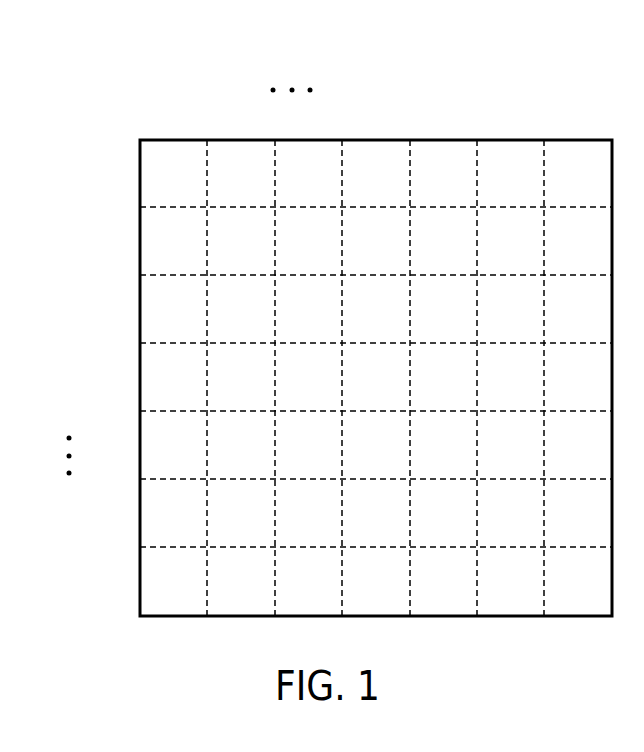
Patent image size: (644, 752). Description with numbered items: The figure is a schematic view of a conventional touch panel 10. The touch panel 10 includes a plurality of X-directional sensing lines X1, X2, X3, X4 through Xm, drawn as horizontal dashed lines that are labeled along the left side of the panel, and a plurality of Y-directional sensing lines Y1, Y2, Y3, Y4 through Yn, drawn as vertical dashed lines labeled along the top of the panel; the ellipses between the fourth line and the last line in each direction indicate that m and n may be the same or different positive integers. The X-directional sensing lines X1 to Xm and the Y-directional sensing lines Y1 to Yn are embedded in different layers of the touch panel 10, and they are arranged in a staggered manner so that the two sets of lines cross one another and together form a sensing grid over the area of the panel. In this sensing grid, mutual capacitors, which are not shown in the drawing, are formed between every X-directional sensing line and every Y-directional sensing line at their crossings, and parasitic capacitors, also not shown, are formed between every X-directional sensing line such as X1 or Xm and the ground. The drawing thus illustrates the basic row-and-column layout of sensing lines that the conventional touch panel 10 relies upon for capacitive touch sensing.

The touch panel 10 is at (82, 46).
The X-directional sensing line X1 is at (162, 207).
The X-directional sensing line X2 is at (162, 275).
The X-directional sensing line X3 is at (162, 343).
The X-directional sensing line X4 is at (162, 411).
The X-directional sensing line Xm is at (162, 547).
The Y-directional sensing line Y1 is at (544, 168).
The Y-directional sensing line Y2 is at (477, 168).
The Y-directional sensing line Y3 is at (410, 168).
The Y-directional sensing line Y4 is at (342, 168).
The Y-directional sensing line Yn is at (207, 168).